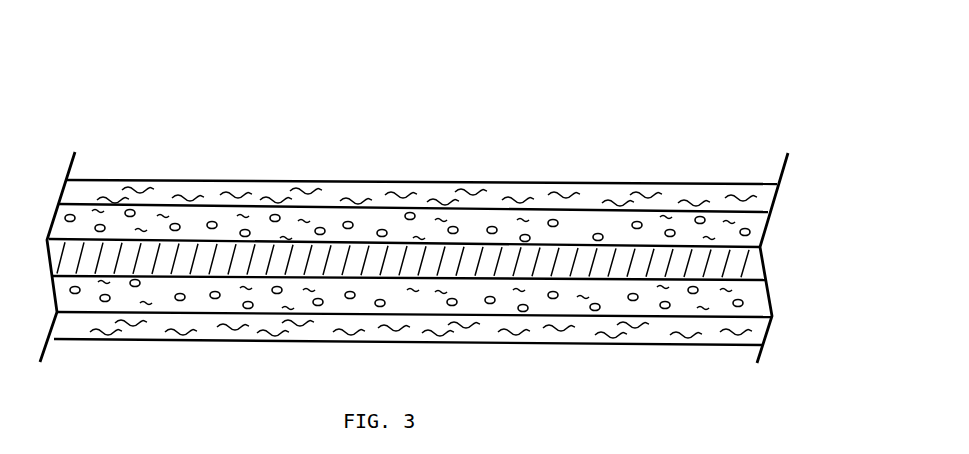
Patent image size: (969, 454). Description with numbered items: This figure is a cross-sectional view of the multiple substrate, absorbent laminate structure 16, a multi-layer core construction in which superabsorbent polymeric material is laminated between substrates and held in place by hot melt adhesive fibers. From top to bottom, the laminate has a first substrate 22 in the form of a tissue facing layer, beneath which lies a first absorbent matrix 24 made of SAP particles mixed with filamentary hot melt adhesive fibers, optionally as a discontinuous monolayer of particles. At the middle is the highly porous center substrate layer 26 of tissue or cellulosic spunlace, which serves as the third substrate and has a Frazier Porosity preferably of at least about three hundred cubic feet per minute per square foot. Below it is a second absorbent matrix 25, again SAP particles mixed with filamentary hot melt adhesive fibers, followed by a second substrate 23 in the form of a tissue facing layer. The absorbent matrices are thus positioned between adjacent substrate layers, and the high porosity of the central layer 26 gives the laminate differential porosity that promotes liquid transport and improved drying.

The absorbent laminate structure 16 is at (547, 120).
The first substrate 22 is at (223, 178).
The second substrate 23 is at (148, 343).
The first absorbent matrix 24 is at (772, 220).
The second absorbent matrix 25 is at (772, 297).
The center substrate layer 26 is at (770, 257).